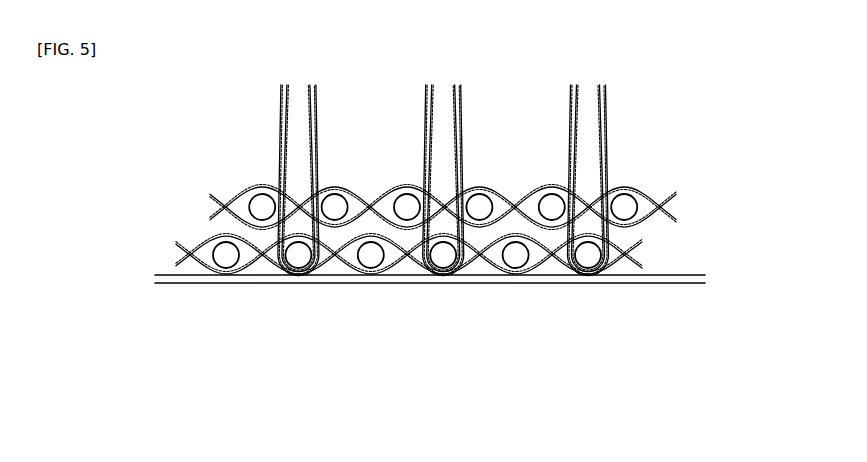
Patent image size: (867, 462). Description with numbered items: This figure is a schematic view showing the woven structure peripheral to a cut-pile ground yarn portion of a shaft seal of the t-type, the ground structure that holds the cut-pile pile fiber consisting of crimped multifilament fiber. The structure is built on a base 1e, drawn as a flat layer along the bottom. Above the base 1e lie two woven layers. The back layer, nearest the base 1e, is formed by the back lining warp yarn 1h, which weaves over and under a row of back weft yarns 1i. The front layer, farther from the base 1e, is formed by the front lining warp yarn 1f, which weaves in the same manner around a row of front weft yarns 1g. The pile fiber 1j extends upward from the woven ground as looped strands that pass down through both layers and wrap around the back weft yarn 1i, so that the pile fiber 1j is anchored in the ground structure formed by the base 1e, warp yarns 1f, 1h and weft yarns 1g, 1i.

The base 1e is at (271, 284).
The front lining warp yarn 1f is at (214, 194).
The front weft yarn 1g is at (336, 203).
The back lining warp yarn 1h is at (178, 242).
The back weft yarn 1i is at (370, 258).
The pile fiber 1j is at (316, 112).